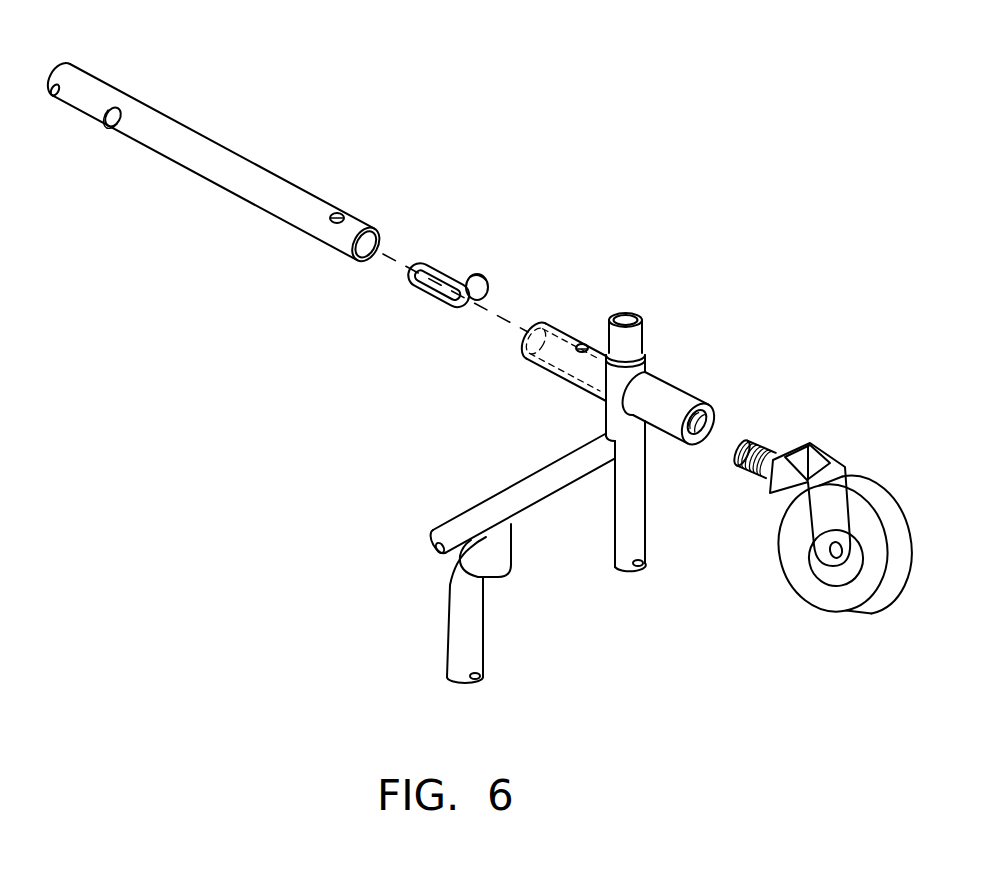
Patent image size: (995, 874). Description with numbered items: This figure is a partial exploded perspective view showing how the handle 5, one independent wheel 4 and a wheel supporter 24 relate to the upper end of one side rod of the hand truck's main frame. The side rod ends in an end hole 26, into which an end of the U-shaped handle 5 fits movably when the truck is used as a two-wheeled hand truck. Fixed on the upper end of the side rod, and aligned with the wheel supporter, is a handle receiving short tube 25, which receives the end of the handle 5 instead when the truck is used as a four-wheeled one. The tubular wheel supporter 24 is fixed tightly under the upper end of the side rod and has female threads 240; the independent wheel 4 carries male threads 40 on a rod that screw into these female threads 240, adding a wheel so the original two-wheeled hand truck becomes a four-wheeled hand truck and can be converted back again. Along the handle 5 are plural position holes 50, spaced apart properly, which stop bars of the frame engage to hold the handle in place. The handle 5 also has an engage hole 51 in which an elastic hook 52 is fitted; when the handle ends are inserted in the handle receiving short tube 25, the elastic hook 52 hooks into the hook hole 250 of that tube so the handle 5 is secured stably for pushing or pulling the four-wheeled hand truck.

The independent wheel 4 is at (875, 503).
The handle 5 is at (250, 157).
The tubular wheel supporter 24 is at (670, 397).
The handle receiving short tube 25 is at (558, 368).
The end hole 26 is at (639, 313).
The male threads 40 is at (746, 468).
The position hole 50 is at (116, 109).
The engage hole 51 is at (338, 211).
The elastic hook 52 is at (450, 272).
The female threads 240 is at (717, 410).
The hook hole 250 is at (584, 344).